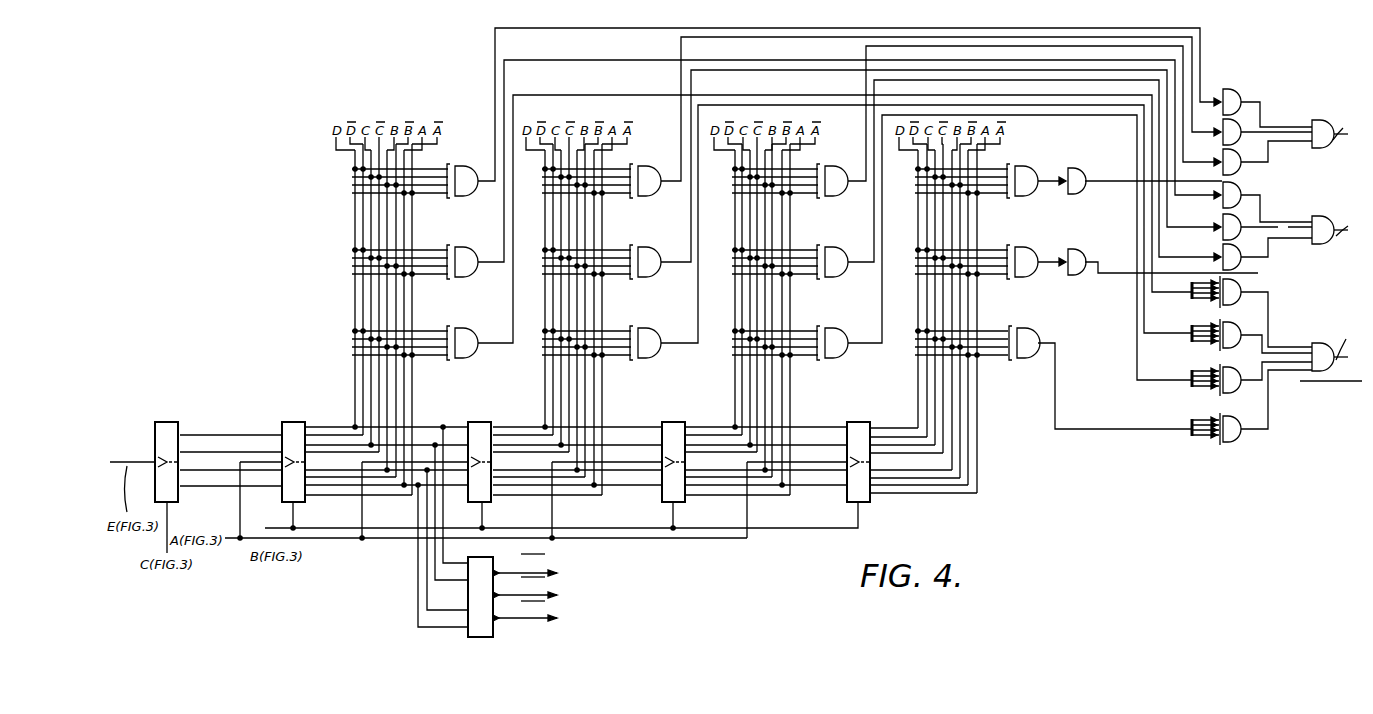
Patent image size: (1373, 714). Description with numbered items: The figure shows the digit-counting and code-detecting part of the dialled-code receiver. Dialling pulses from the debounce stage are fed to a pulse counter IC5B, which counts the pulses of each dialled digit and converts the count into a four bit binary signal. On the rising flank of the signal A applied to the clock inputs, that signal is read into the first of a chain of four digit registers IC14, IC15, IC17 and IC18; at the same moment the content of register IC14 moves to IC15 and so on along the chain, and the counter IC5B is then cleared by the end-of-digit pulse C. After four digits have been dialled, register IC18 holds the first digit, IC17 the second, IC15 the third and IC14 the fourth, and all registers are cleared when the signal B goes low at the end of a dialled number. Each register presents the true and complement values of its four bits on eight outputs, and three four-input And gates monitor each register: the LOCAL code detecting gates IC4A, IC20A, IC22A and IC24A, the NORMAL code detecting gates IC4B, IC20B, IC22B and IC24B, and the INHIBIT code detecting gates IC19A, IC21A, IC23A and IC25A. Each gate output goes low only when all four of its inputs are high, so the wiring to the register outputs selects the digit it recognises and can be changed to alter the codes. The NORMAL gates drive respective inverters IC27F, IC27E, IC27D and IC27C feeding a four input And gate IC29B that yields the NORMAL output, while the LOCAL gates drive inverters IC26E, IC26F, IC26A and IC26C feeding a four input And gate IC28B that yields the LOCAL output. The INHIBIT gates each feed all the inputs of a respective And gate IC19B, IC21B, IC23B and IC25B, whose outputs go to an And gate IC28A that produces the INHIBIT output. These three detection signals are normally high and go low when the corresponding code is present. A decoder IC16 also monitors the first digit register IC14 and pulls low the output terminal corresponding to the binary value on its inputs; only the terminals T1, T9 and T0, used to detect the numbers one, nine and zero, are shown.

The pulse counter IC5B is at (167, 452).
The digit register IC14 is at (296, 452).
The digit register IC15 is at (483, 452).
The decoder IC16 is at (509, 611).
The digit register IC17 is at (675, 452).
The digit register IC18 is at (860, 452).
The LOCAL mode code detecting And gate IC4A is at (421, 174).
The NORMAL mode code detecting And gate IC4B is at (421, 255).
The INHIBIT mode code detecting And gate IC19A is at (421, 336).
The LOCAL mode code detecting And gate IC20A is at (607, 174).
The NORMAL mode code detecting And gate IC20B is at (607, 255).
The INHIBIT mode code detecting And gate IC21A is at (607, 336).
The LOCAL mode code detecting And gate IC22A is at (796, 174).
The NORMAL mode code detecting And gate IC22B is at (796, 255).
The INHIBIT mode code detecting And gate IC23A is at (796, 336).
The LOCAL mode code detecting And gate IC24A is at (981, 175).
The NORMAL mode code detecting And gate IC24B is at (981, 256).
The INHIBIT mode code detecting And gate IC25A is at (983, 337).
The inverter IC26C is at (1076, 178).
The inverter IC27C is at (1076, 259).
The inverter IC26E is at (1236, 84).
The inverter IC26F is at (1242, 119).
The inverter IC26A is at (1241, 150).
The inverter IC27F is at (1244, 188).
The inverter IC27E is at (1244, 215).
The inverter IC27D is at (1244, 268).
The And gate IC19B is at (1244, 292).
The And gate IC21B is at (1244, 328).
The And gate IC23B is at (1244, 398).
The And gate IC25B is at (1244, 433).
The four input And gate IC28B is at (1318, 120).
The OR gate NORMAL IC29B is at (1330, 233).
The And gate IC28A is at (1300, 345).
The output terminal T9 is at (533, 562).
The output terminal T1 is at (533, 585).
The output terminal T0 is at (533, 609).